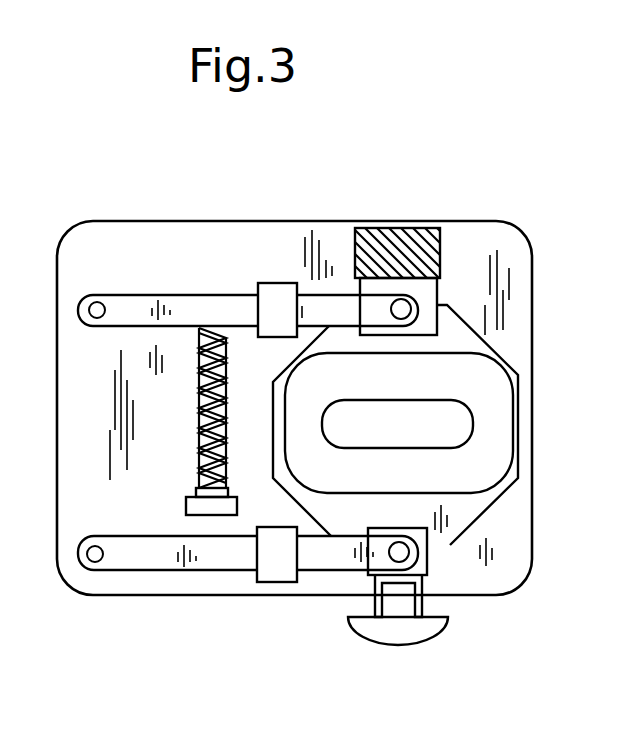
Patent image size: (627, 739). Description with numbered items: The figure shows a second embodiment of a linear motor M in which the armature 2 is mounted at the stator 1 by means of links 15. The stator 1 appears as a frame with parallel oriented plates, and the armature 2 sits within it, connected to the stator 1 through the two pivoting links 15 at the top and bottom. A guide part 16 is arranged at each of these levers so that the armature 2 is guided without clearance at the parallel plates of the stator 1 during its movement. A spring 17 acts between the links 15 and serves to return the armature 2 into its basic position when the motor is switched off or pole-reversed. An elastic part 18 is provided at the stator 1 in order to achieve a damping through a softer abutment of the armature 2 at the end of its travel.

The stator 1 is at (345, 212).
The armature 2 is at (472, 507).
The links 15 is at (183, 308).
The guide part 16 is at (272, 283).
The spring 17 is at (200, 392).
The elastic part 18 is at (438, 228).
The linear motor M is at (560, 333).